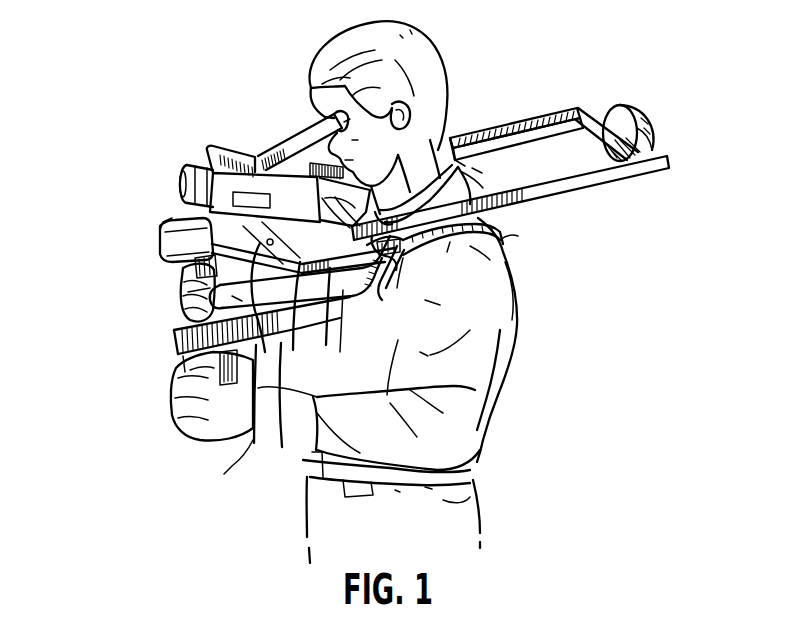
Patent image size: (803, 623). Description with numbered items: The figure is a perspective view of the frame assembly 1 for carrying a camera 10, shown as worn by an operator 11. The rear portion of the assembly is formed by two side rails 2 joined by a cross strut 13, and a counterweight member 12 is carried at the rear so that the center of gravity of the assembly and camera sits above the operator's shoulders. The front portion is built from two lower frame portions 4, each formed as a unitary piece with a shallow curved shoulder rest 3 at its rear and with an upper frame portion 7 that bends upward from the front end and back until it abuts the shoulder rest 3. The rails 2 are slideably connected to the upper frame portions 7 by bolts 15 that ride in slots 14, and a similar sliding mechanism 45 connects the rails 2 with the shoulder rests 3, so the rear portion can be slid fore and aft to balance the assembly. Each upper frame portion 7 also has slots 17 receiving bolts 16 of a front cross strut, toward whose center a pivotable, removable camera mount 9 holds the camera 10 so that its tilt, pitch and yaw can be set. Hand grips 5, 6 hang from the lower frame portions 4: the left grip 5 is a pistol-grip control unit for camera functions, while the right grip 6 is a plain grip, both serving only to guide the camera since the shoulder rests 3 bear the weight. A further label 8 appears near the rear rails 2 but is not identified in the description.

The frame assembly 1 is at (487, 104).
The side rails 2 is at (530, 117).
The shoulder rests 3 is at (435, 256).
The lower frame portions 4 is at (343, 298).
The left hand grip 5 is at (175, 371).
The right hand grip 6 is at (185, 268).
The upper frame portions 7 is at (160, 230).
The rail spacer 8 is at (460, 174).
The camera mount 9 is at (158, 238).
The camera 10 is at (210, 150).
The operator 11 is at (476, 410).
The counterweight member 12 is at (644, 115).
The cross strut 13 is at (592, 116).
The slots 14 is at (382, 286).
The bolts 15 is at (392, 252).
The bolts 16 is at (292, 332).
The slots 17 is at (328, 334).
The sliding connection mechanism 45 is at (505, 250).